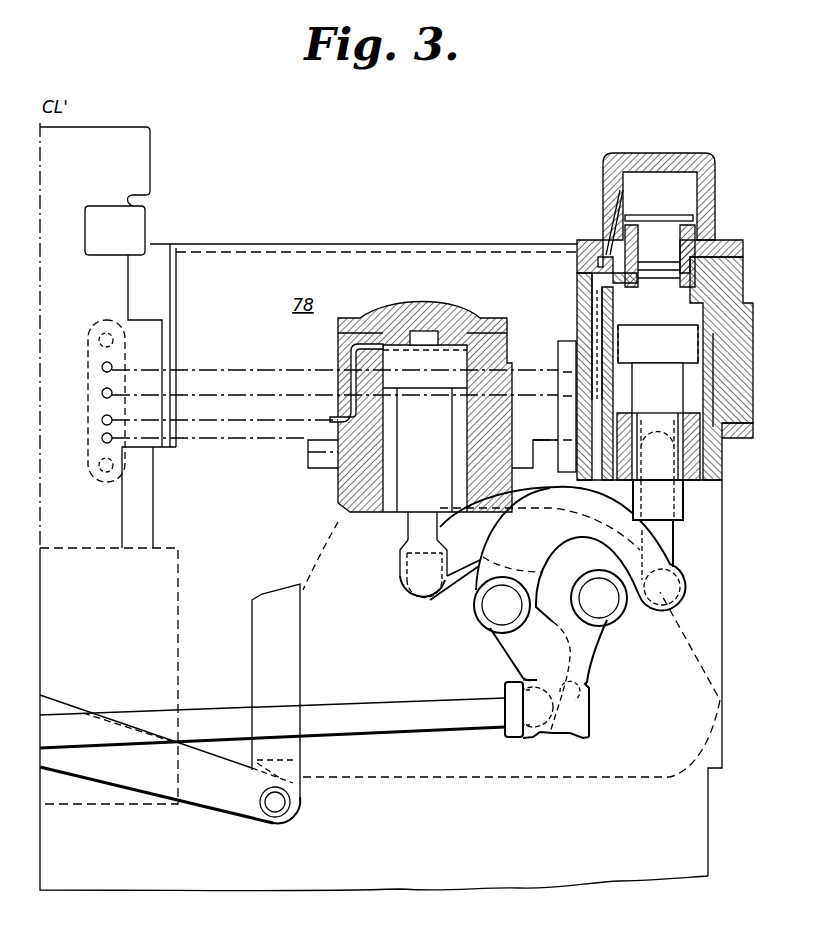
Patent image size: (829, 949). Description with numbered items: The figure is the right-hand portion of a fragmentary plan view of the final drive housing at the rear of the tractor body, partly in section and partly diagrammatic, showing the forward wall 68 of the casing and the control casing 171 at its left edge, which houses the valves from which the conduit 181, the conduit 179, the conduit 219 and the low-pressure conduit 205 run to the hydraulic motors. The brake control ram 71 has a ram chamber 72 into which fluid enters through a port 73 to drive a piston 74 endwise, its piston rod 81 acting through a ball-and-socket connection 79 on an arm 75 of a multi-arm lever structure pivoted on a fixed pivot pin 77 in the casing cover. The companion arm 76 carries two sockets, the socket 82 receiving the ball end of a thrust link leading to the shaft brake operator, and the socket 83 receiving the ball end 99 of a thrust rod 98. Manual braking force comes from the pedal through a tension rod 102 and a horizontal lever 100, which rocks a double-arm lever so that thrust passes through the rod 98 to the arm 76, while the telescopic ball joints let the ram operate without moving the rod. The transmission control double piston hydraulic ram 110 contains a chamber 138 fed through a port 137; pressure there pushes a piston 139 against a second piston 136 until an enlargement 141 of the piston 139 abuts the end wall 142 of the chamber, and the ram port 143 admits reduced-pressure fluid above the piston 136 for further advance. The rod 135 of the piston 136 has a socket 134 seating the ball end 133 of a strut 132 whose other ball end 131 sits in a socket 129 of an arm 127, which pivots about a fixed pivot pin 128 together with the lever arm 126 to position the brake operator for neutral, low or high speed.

The forward wall 68 is at (438, 250).
The control casing 171 is at (113, 134).
The conduit 181 is at (102, 367).
The conduit 179 is at (102, 393).
The conduit 219 is at (102, 420).
The low-pressure conduit 205 is at (102, 440).
The ram 71 is at (483, 310).
The ram chamber 72 is at (358, 346).
The port 73 is at (330, 420).
The piston 74 is at (413, 388).
The piston rod 81 is at (407, 534).
The ball-and-socket connection 79 is at (400, 582).
The arm 75 is at (453, 582).
The arm 127 is at (480, 567).
The arm 76 is at (593, 650).
The fixed pivot pin 77 is at (610, 604).
The fixed pivot pin 128 is at (495, 612).
The lever arm 126 is at (508, 656).
The socket 129 is at (700, 596).
The ball end 131 is at (690, 572).
The strut 132 is at (670, 538).
The socket 82 is at (575, 742).
The socket 83 is at (518, 742).
The ball end 99 is at (503, 694).
The rod 98 is at (392, 732).
The tension rod 102 is at (252, 633).
The horizontal lever 100 is at (215, 802).
The chamber 138 is at (670, 178).
The double piston hydraulic ram 110 is at (732, 208).
The ball end 133 is at (730, 455).
The socket 134 is at (738, 432).
The enlargement 141 is at (660, 215).
The end wall 142 is at (698, 228).
The piston 139 is at (695, 245).
The piston 136 is at (658, 344).
The rod 135 is at (657, 421).
The ram port 143 is at (566, 396).
The port 137 is at (570, 378).